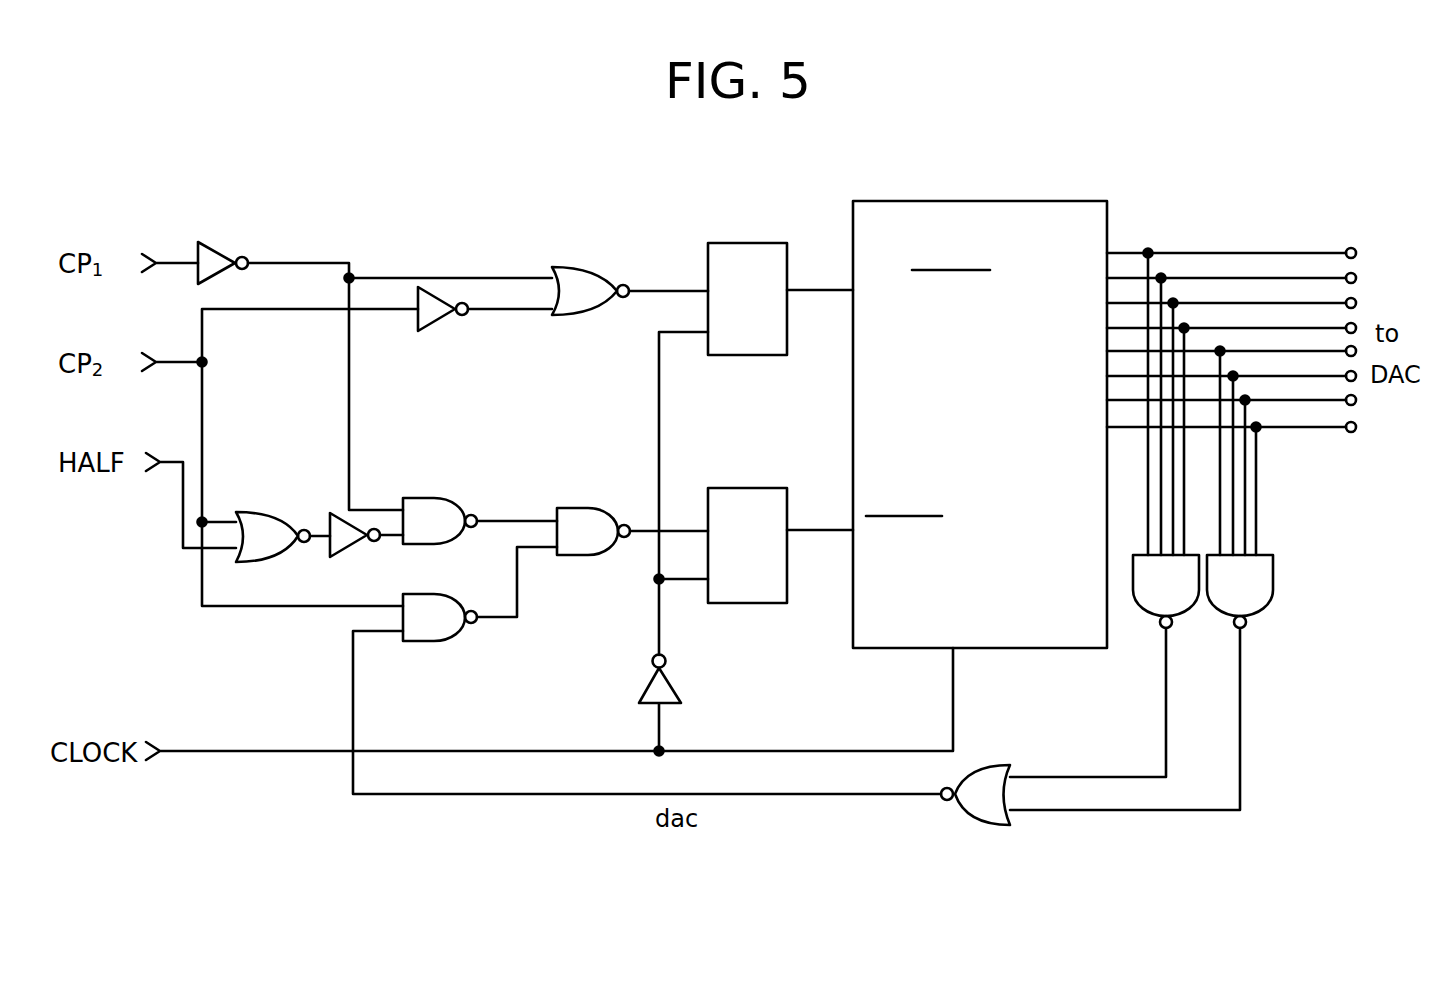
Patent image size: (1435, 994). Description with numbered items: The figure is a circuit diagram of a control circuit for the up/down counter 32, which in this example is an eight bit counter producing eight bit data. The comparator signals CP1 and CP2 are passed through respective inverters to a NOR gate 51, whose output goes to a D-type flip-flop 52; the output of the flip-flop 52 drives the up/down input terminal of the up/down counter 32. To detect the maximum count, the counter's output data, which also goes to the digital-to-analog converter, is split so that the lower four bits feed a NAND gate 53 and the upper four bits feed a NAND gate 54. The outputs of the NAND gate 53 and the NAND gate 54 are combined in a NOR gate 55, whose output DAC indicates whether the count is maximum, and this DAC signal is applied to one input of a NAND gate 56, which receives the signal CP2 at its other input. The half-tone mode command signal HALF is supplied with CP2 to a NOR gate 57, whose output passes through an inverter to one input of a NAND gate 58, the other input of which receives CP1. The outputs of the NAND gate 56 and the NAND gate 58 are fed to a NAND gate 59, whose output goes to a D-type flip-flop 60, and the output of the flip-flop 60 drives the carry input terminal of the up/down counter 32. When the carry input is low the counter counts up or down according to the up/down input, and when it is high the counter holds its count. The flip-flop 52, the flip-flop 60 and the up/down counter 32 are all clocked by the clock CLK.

The up/down counter 32 is at (1022, 201).
The NOR gate 51 is at (582, 267).
The D-type flip-flop 52 is at (748, 243).
The NAND gate 53 is at (1143, 608).
The NAND gate 54 is at (1262, 607).
The NOR gate 55 is at (978, 822).
The NAND gate 56 is at (428, 642).
The NOR gate 57 is at (262, 512).
The NAND gate 58 is at (437, 498).
The NAND gate 59 is at (590, 508).
The D-type flip-flop 60 is at (765, 488).